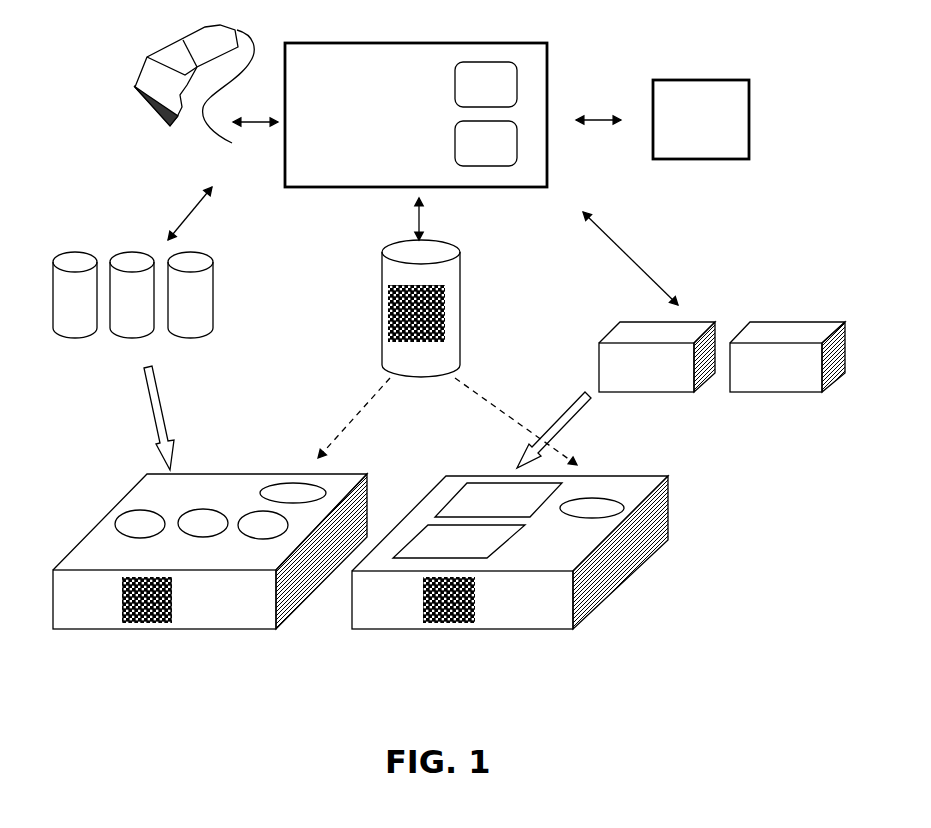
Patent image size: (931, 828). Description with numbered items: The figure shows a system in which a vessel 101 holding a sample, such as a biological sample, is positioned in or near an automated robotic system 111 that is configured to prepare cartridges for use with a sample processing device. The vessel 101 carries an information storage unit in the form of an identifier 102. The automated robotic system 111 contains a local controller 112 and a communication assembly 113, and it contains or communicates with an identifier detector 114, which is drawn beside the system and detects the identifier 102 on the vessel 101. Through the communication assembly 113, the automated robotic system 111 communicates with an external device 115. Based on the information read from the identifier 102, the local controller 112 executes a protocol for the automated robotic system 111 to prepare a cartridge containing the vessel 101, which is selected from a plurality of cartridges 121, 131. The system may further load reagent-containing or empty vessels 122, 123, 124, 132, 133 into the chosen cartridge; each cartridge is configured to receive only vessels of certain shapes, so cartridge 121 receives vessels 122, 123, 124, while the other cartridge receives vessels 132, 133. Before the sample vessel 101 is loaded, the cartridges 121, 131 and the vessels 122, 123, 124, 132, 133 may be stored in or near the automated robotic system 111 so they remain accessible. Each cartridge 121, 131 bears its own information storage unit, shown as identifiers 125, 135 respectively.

The vessel 101 is at (462, 308).
The identifier 102 is at (393, 310).
The automated robotic system 111 is at (547, 85).
The local controller 112 is at (486, 84).
The communication assembly 113 is at (486, 143).
The identifier detector 114 is at (142, 85).
The external device 115 is at (701, 119).
The cartridge 121 is at (153, 497).
The vessel 122 is at (77, 311).
The vessel 123 is at (133, 311).
The vessel 124 is at (193, 311).
The identifier 125 is at (177, 600).
The cartridge 131 is at (635, 486).
The vessel 132 is at (657, 372).
The vessel 133 is at (787, 372).
The identifier 135 is at (478, 600).